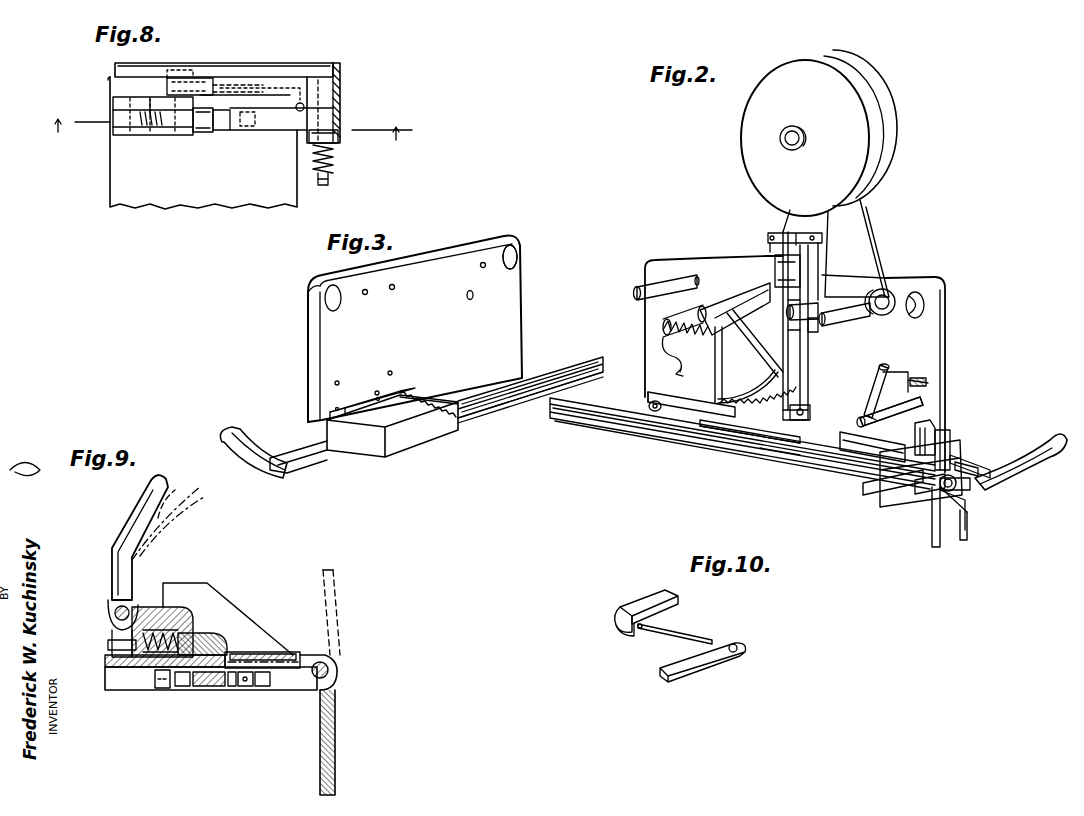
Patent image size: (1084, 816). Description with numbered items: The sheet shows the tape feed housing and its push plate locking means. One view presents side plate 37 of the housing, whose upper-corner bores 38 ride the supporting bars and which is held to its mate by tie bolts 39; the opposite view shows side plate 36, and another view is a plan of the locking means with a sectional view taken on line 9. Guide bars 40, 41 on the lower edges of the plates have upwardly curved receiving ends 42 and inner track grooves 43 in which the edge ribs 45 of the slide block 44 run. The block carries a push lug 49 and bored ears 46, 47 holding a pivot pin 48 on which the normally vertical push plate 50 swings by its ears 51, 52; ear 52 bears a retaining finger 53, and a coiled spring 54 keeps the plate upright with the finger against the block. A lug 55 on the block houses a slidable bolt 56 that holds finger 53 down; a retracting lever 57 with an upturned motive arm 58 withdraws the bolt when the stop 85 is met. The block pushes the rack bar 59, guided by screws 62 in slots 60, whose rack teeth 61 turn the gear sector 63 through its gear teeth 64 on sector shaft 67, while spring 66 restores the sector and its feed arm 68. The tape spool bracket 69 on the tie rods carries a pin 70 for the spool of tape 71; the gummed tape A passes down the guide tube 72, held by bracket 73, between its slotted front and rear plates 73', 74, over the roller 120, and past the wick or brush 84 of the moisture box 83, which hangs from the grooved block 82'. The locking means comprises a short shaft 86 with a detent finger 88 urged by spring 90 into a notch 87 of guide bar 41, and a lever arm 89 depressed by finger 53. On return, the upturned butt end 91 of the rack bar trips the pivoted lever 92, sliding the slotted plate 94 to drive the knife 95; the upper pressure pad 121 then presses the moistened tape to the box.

In FIG. 2, the gummed tape A is at (787, 228).
In FIG. 8, the section line 9— 9 is at (226, 125).
In FIG. 3, the side plate 36 is at (415, 328).
In FIG. 2, the side plate 37 is at (942, 338).
In FIG. 3, the bore 38 is at (516, 254).
In FIG. 2, the bore 38 is at (925, 300).
In FIG. 2, the tie bolt 39 is at (688, 281).
In FIG. 3, the guide bar 40 is at (505, 383).
In FIG. 2, the guide bar 41 is at (612, 386).
In FIG. 3, the upwardly curved receiving end 42 is at (277, 476).
In FIG. 2, the upwardly curved receiving end 42 is at (1014, 480).
In FIG. 3, the track groove 43 is at (496, 420).
In FIG. 2, the track groove 43 is at (586, 415).
In FIG. 2, the slide block 44 is at (893, 482).
In FIG. 9, the slide block 44 is at (142, 690).
In FIG. 8, the edge rib 45 is at (308, 72).
In FIG. 2, the edge rib 45 is at (866, 492).
In FIG. 2, the bored ear 46 is at (933, 500).
In FIG. 8, the bored ear 47 is at (340, 88).
In FIG. 2, the bored ear 47 is at (965, 466).
In FIG. 8, the pivot pin 48 is at (327, 184).
In FIG. 2, the pivot pin 48 is at (925, 500).
In FIG. 9, the pivot pin 48 is at (329, 669).
In FIG. 8, the push lug 49 is at (180, 78).
In FIG. 2, the push lug 49 is at (948, 447).
In FIG. 9, the push lug 49 is at (218, 596).
In FIG. 2, the push plate 50 is at (942, 542).
In FIG. 9, the push plate 50 is at (337, 716).
In FIG. 2, the bored ear 51 is at (962, 532).
In FIG. 8, the bored ear 52 is at (337, 104).
In FIG. 2, the bored ear 52 is at (968, 482).
In FIG. 8, the retaining finger 53 is at (273, 125).
In FIG. 2, the retaining finger 53 is at (960, 462).
In FIG. 9, the retaining finger 53 is at (262, 655).
In FIG. 8, the coiled spring 54 is at (333, 161).
In FIG. 2, the coiled spring 54 is at (962, 498).
In FIG. 8, the lug 55 is at (146, 137).
In FIG. 9, the lug 55 is at (148, 606).
In FIG. 8, the slidable bolt 56 is at (205, 135).
In FIG. 9, the slidable bolt 56 is at (200, 640).
In FIG. 2, the retracting lever 57 is at (937, 430).
In FIG. 9, the retracting lever 57 is at (106, 593).
In FIG. 8, the motive arm 58 is at (145, 98).
In FIG. 9, the motive arm 58 is at (128, 520).
In FIG. 2, the rack bar 59 is at (693, 400).
In FIG. 2, the slot 60 is at (661, 411).
In FIG. 2, the rack teeth 61 is at (735, 430).
In FIG. 2, the screw 62 is at (645, 395).
In FIG. 2, the gear sector 63 is at (733, 366).
In FIG. 2, the gear teeth 64 is at (762, 398).
In FIG. 2, the spring 66 is at (661, 340).
In FIG. 2, the sector shaft 67 is at (664, 328).
In FIG. 2, the sector feed arm 68 is at (738, 300).
In FIG. 2, the tape spool bracket 69 is at (857, 248).
In FIG. 2, the pin 70 is at (792, 126).
In FIG. 2, the spool of tape 71 is at (880, 164).
In FIG. 2, the guide tube 72 is at (819, 354).
In FIG. 2, the bracket 73 is at (871, 293).
In FIG. 2, the front plate 73' is at (777, 315).
In FIG. 2, the rear plate 74 is at (818, 326).
In FIG. 3, the block 82' is at (372, 391).
In FIG. 3, the moisture box 83 is at (392, 426).
In FIG. 3, the wick or brush 84 is at (435, 395).
In FIG. 9, the stop 85 is at (170, 506).
In FIG. 8, the short shaft 86 is at (225, 88).
In FIG. 9, the short shaft 86 is at (213, 688).
In FIG. 10, the short shaft 86 is at (692, 633).
In FIG. 2, the notch 87 is at (830, 455).
In FIG. 8, the detent finger 88 is at (205, 78).
In FIG. 9, the detent finger 88 is at (180, 690).
In FIG. 10, the detent finger 88 is at (653, 600).
In FIG. 8, the lever arm 89 is at (248, 128).
In FIG. 9, the lever arm 89 is at (243, 688).
In FIG. 10, the lever arm 89 is at (693, 672).
In FIG. 8, the spring 90 is at (236, 92).
In FIG. 9, the spring 90 is at (198, 690).
In FIG. 2, the upturned butt end 91 is at (895, 411).
In FIG. 2, the pivoted lever 92 is at (878, 396).
In FIG. 2, the slotted plate 94 is at (908, 378).
In FIG. 2, the knife 95 is at (800, 458).
In FIG. 2, the roller 120 is at (765, 443).
In FIG. 2, the upper pressure pad 121 is at (792, 461).